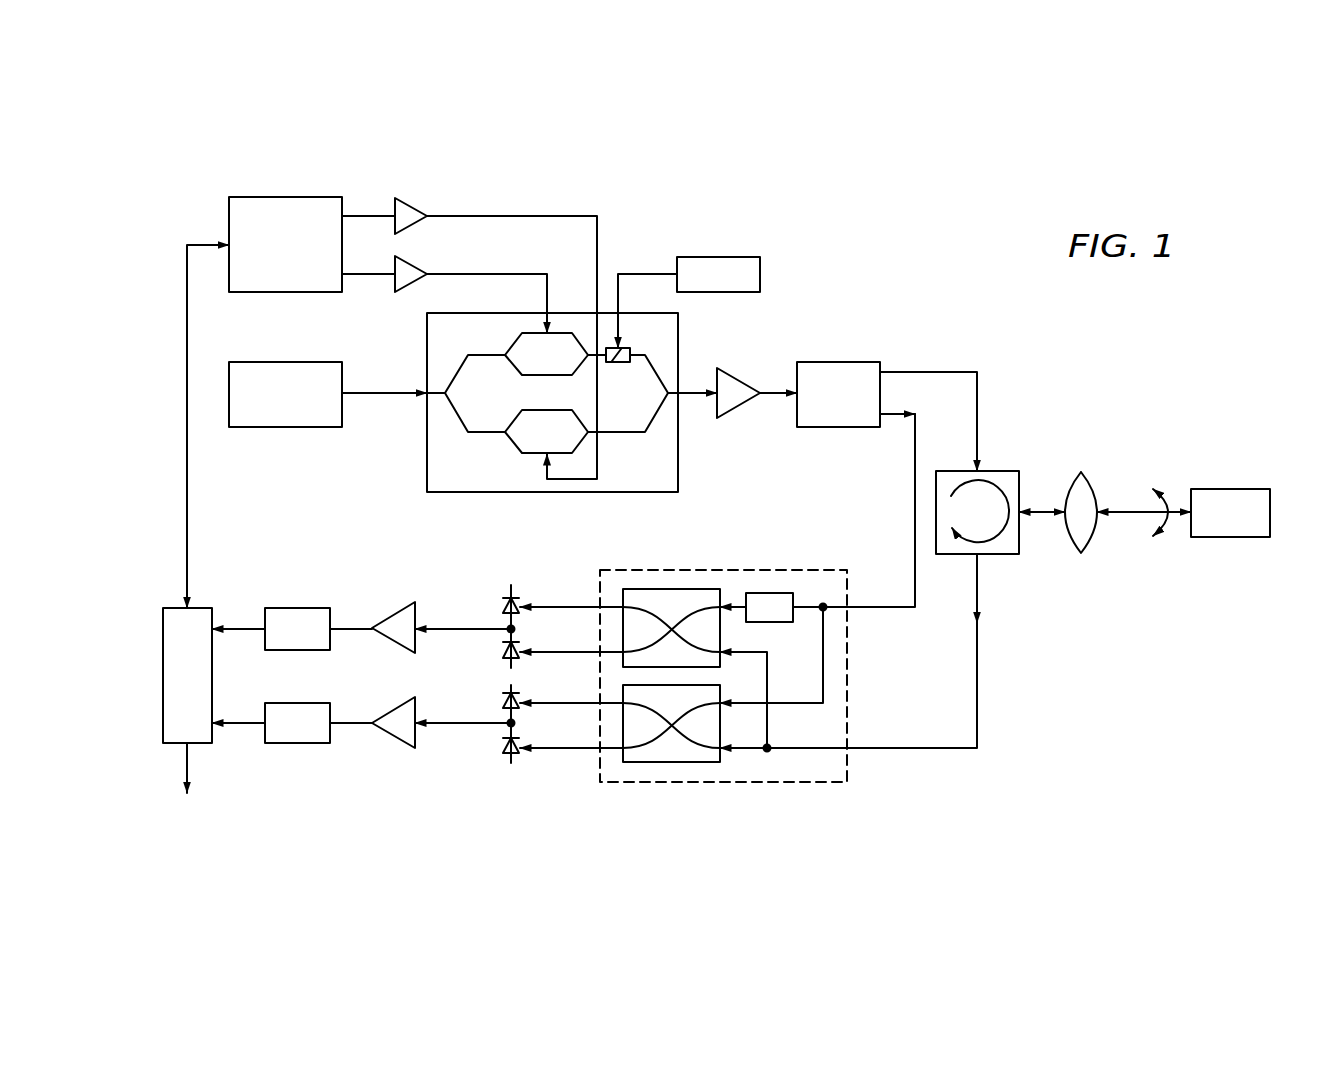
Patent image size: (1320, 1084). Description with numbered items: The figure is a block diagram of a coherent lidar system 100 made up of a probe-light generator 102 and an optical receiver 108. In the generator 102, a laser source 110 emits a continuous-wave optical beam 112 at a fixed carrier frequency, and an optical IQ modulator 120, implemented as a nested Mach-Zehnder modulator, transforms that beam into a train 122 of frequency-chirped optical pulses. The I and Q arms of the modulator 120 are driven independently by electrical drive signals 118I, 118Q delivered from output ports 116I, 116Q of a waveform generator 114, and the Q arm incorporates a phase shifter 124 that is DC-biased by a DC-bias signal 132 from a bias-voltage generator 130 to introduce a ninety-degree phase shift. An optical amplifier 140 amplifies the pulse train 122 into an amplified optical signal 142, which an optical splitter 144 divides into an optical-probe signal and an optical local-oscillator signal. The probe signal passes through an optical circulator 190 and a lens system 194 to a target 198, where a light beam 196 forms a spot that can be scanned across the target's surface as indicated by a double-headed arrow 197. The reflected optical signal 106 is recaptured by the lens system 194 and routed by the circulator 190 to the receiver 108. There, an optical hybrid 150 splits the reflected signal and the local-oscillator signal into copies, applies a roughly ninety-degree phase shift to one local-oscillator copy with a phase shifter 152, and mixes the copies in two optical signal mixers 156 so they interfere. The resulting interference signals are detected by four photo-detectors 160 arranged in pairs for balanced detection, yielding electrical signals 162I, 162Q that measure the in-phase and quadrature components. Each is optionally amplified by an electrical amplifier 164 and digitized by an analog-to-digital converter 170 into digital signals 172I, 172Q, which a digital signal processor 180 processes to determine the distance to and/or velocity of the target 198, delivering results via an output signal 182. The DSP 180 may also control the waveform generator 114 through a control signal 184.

The coherent lidar system 100 is at (1134, 295).
The probe-light generator 102 is at (815, 252).
The reflected optical signal 106 is at (977, 666).
The optical receiver 108 is at (1037, 718).
The laser source 110 is at (280, 362).
The continuous-wave optical beam 112 is at (382, 400).
The waveform generator 114 is at (280, 197).
The output port 116I is at (373, 212).
The output port 116Q is at (373, 278).
The electrical drive signal 118I is at (497, 216).
The electrical drive signal 118Q is at (462, 274).
The optical IQ modulator 120 is at (527, 402).
The train of frequency-chirped optical pulses 122 is at (696, 397).
The phase shifter 124 is at (619, 363).
The bias-voltage generator 130 is at (715, 257).
The DC-bias signal 132 is at (648, 270).
The optical amplifier 140 is at (741, 386).
The amplified optical signal 142 is at (772, 397).
The optical splitter 144 is at (835, 362).
The optical hybrid 150 is at (727, 661).
The phase shifter 152 is at (770, 623).
The optical signal mixer 156 is at (658, 608).
The photo-detector 160 is at (512, 572).
The electrical signal 162Q is at (465, 628).
The electrical signal 162I is at (465, 724).
The electrical amplifier 164 is at (400, 612).
The analog-to-digital converter 170 is at (297, 605).
The digital signal 172Q is at (240, 624).
The digital signal 172I is at (242, 735).
The digital signal processor 180 is at (180, 606).
The output signal 182 is at (187, 772).
The control signal 184 is at (187, 483).
The optical circulator 190 is at (1000, 471).
The lens system 194 is at (1090, 484).
The light beam 196 is at (1125, 515).
The double-headed arrow 197 is at (1170, 525).
The target 198 is at (1218, 489).